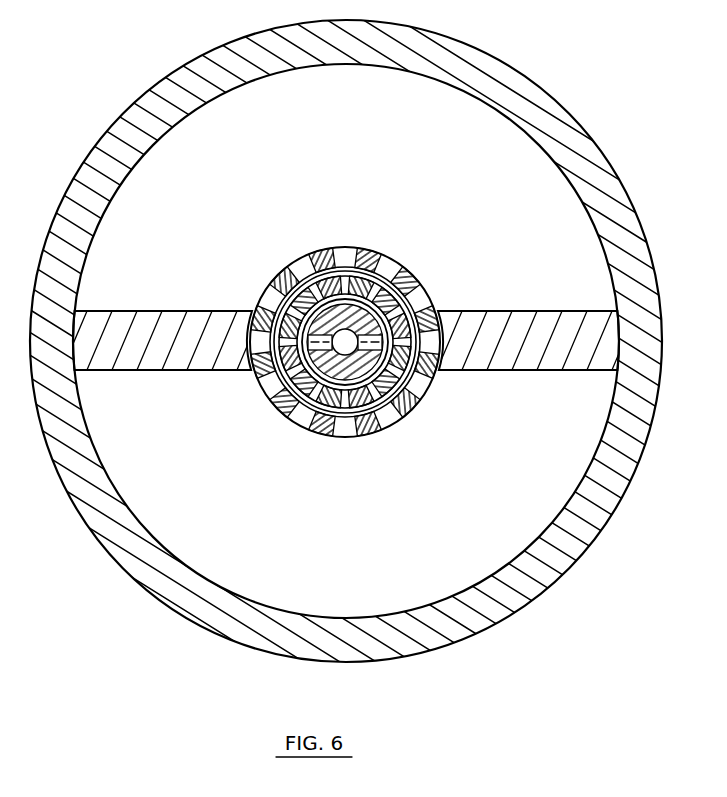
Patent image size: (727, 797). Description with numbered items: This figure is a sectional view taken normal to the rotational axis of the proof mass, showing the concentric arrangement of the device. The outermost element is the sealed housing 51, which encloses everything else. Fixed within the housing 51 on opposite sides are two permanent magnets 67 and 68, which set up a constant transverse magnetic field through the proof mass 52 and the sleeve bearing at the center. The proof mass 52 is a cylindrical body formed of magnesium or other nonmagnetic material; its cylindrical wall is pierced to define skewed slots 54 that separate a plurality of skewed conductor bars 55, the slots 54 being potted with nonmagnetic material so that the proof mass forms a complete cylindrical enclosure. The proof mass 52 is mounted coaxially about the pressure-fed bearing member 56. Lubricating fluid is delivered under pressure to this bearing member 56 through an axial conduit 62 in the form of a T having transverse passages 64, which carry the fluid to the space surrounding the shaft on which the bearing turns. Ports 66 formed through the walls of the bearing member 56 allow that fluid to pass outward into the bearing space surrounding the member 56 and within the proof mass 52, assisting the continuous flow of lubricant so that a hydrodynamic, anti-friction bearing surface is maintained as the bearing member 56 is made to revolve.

The sealed housing 51 is at (623, 454).
The proof mass 52 is at (399, 267).
The skewed slots 54 is at (413, 290).
The skewed conductor bars 55 is at (362, 250).
The pressure-fed bearing member 56 is at (409, 411).
The axial conduit 62 is at (343, 353).
The transverse passages 64 is at (322, 349).
The ports 66 is at (398, 371).
The permanent magnet 67 is at (176, 318).
The permanent magnet 68 is at (483, 324).